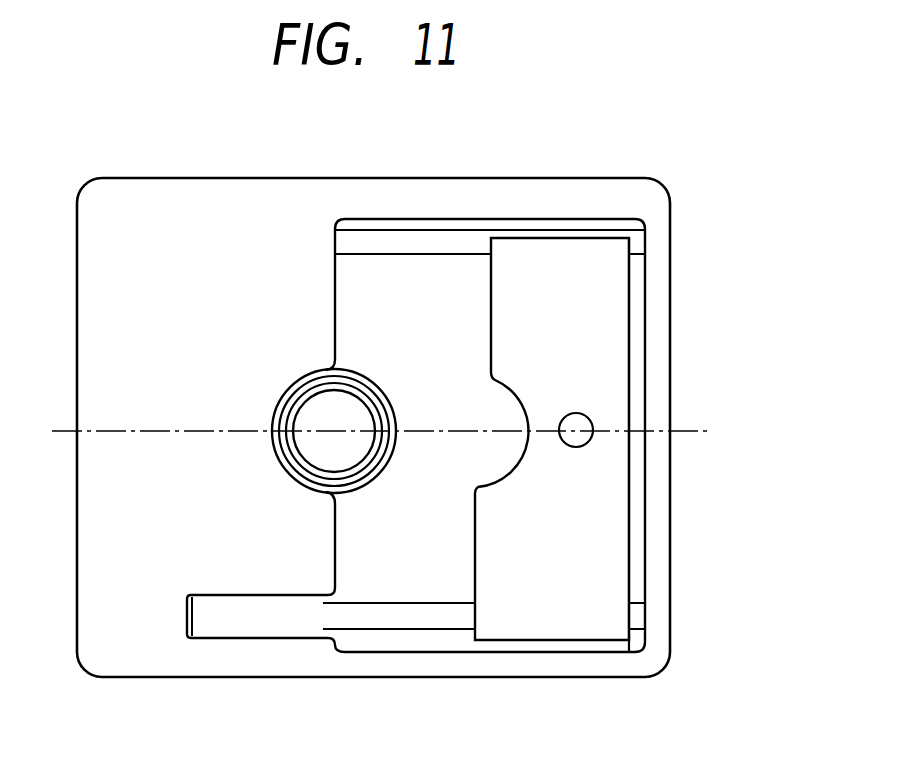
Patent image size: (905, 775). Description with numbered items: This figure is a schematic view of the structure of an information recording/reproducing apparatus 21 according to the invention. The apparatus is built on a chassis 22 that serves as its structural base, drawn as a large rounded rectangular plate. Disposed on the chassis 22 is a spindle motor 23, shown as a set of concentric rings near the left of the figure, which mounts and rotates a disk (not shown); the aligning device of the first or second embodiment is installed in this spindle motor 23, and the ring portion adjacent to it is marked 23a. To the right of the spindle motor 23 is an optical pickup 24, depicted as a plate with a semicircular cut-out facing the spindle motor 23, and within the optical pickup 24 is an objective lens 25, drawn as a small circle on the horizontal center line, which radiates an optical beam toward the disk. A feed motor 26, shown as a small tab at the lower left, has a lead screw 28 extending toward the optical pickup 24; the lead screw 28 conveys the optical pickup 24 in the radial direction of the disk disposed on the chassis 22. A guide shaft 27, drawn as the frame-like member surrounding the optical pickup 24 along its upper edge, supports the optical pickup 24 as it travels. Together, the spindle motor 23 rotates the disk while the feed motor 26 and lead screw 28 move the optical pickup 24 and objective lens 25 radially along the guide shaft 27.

The information recording/reproducing apparatus 21 is at (441, 408).
The chassis 22 is at (125, 620).
The spindle motor 23 is at (340, 387).
The annular flange of boss 23a is at (357, 373).
The optical pickup 24 is at (580, 590).
The objective lens 25 is at (578, 424).
The feed motor 26 is at (228, 622).
The guide shaft 27 is at (470, 245).
The lead screw 28 is at (450, 615).